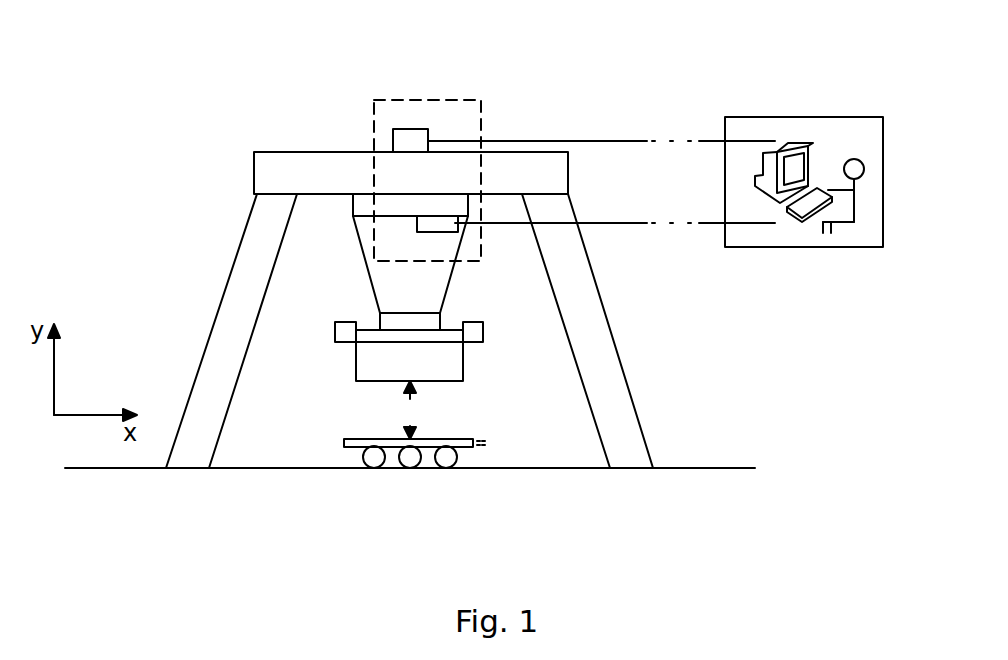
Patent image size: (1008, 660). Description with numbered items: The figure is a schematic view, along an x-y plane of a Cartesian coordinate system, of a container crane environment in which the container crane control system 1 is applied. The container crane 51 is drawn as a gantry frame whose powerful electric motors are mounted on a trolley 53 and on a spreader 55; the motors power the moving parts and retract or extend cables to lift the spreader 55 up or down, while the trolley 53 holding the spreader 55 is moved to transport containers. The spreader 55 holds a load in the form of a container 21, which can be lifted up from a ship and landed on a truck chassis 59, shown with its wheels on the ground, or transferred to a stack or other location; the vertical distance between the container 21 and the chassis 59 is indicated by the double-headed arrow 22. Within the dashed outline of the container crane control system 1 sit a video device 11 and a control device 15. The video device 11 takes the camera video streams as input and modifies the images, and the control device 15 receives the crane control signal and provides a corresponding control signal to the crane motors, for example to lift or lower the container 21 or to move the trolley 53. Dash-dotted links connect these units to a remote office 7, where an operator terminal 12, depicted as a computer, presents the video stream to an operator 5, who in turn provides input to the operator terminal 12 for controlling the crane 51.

The container crane control system 1 is at (482, 130).
The operator 5 is at (855, 205).
The office 7 is at (778, 117).
The video device 11 is at (407, 129).
The operator terminal 12 is at (803, 148).
The control device 15 is at (438, 232).
The container 21 is at (452, 358).
The measuring distance 22 is at (410, 410).
The container crane 51 is at (322, 130).
The trolley 53 is at (353, 206).
The spreader 55 is at (366, 328).
The truck chassis 59 is at (463, 447).